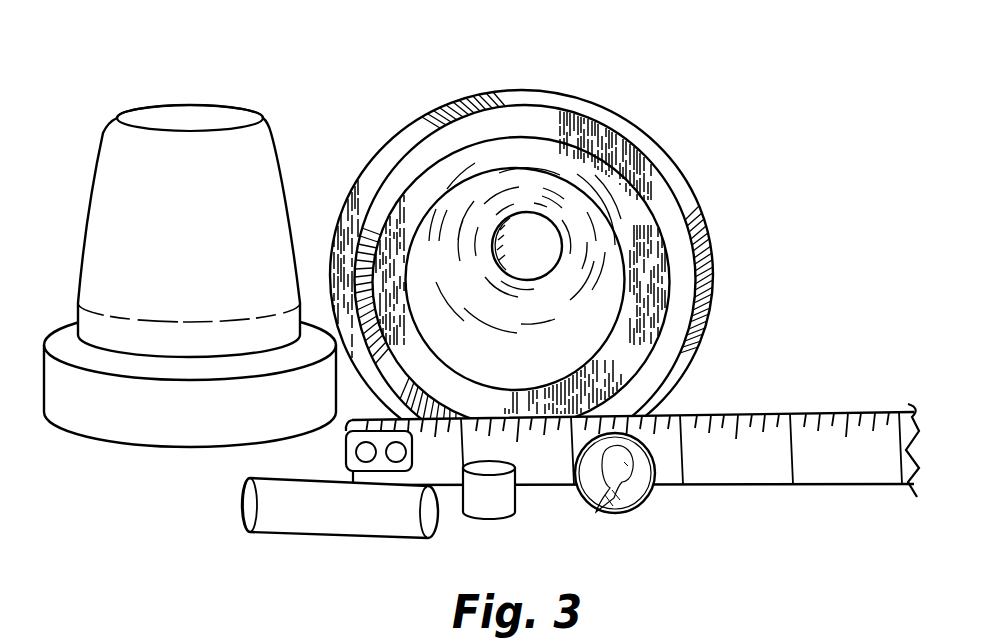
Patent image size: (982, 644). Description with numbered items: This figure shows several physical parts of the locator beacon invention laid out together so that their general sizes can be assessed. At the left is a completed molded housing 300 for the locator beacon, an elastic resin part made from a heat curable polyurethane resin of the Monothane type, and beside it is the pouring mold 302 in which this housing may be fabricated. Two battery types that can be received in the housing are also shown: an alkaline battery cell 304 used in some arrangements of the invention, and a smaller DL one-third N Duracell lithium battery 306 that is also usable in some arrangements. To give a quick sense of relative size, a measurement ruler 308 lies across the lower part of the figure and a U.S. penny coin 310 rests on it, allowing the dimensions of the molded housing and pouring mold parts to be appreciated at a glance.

The molded housing 300 is at (223, 104).
The pouring mold 302 is at (506, 90).
The alkaline battery cell 304 is at (313, 527).
The lithium battery 306 is at (518, 500).
The measurement ruler 308 is at (722, 480).
The penny coin 310 is at (632, 512).